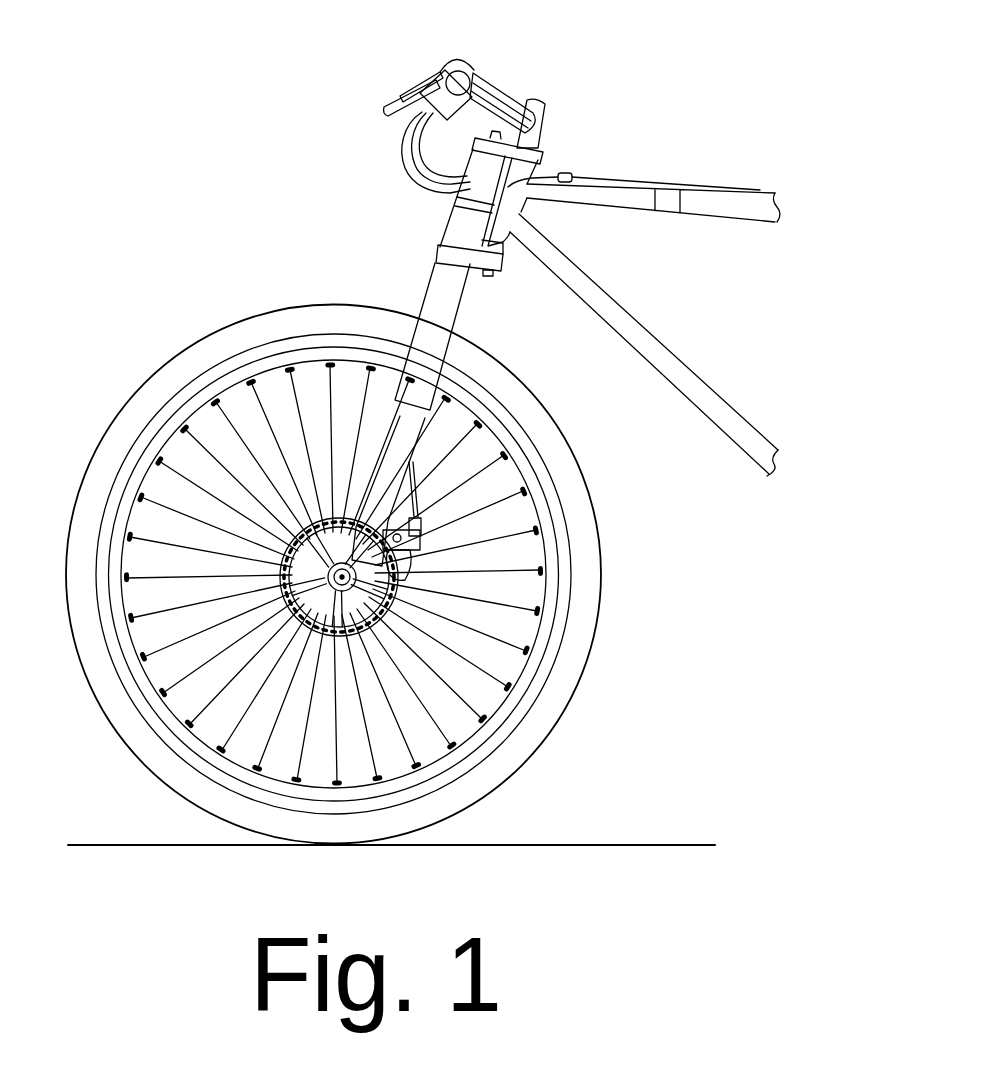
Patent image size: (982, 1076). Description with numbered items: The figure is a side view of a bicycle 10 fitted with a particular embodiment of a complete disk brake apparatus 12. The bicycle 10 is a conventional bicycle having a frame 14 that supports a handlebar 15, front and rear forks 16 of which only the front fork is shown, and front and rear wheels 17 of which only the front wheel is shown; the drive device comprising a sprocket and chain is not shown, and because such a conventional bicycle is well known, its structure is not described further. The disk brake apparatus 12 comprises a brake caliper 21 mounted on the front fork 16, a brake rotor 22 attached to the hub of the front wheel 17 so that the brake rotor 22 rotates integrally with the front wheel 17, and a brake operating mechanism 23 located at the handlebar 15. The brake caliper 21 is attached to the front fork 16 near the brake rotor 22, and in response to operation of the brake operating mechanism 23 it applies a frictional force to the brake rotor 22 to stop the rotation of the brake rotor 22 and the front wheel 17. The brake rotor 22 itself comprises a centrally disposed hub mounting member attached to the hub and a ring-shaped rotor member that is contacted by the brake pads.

The bicycle 10 is at (291, 151).
The disk brake apparatus 12 is at (410, 612).
The frame 14 is at (608, 292).
The handlebar 15 is at (510, 90).
The front fork 16 is at (462, 298).
The front wheel 17 is at (600, 499).
The brake caliper 21 is at (413, 556).
The brake rotor 22 is at (356, 642).
The brake operating mechanism 23 is at (428, 73).